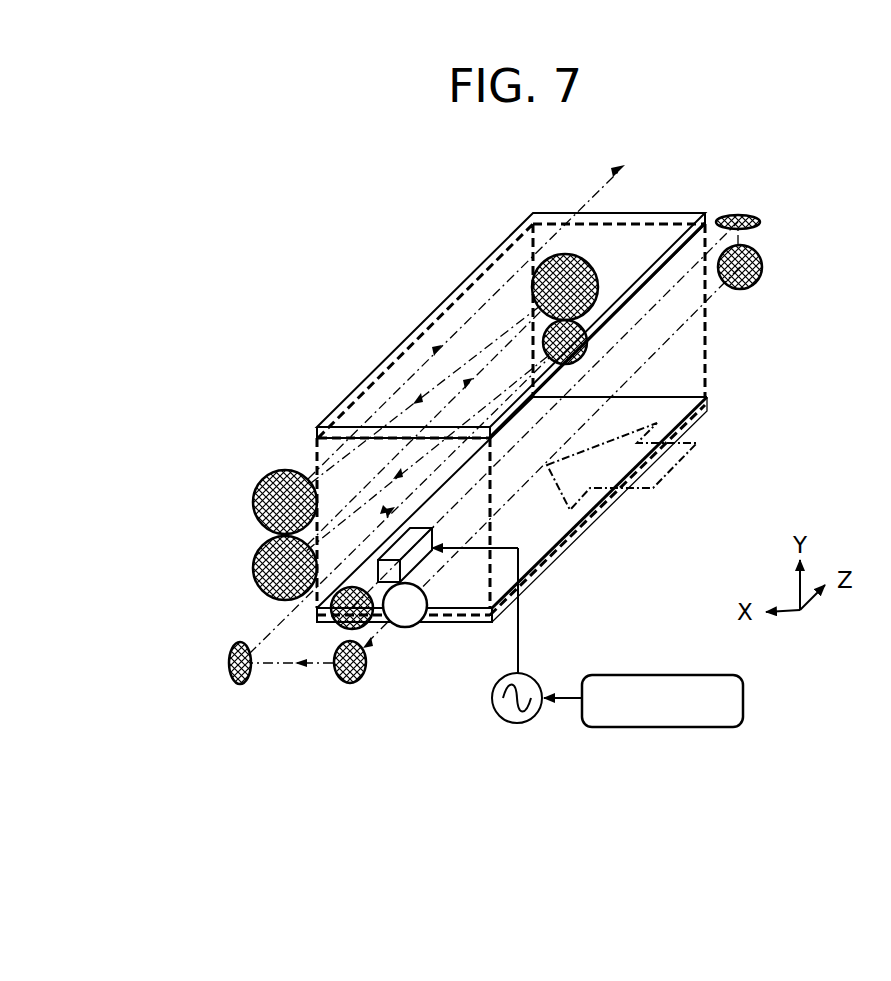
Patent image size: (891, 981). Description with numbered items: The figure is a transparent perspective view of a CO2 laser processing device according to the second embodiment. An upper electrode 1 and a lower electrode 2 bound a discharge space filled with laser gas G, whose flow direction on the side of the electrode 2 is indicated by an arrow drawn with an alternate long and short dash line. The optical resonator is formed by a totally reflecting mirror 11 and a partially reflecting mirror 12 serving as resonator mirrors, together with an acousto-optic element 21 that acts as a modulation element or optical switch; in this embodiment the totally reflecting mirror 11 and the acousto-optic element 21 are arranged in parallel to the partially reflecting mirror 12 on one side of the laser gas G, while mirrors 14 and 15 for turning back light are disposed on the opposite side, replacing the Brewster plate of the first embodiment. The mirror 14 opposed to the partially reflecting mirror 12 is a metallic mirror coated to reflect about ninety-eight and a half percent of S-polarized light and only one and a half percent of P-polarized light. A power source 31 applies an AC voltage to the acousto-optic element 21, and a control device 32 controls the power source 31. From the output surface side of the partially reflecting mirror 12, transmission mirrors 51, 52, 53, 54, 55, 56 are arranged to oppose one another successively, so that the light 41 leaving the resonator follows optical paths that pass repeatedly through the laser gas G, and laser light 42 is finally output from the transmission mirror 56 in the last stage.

The electrode 1 is at (518, 228).
The electrode 2 is at (620, 497).
The laser gas G is at (683, 458).
The totally reflecting mirror 11 is at (367, 628).
The partially reflecting mirror 12 is at (420, 628).
The mirror 14 is at (763, 262).
The mirror 15 is at (763, 222).
The acousto-optic element 21 is at (418, 548).
The power source 31 is at (540, 718).
The control device 32 is at (633, 675).
The incident light 41 is at (267, 668).
The laser light 42 is at (603, 185).
The transmission mirror 51 is at (345, 685).
The transmission mirror 52 is at (228, 663).
The transmission mirror 53 is at (543, 345).
The transmission mirror 54 is at (253, 568).
The transmission mirror 55 is at (533, 287).
The transmission mirror 56 is at (253, 502).